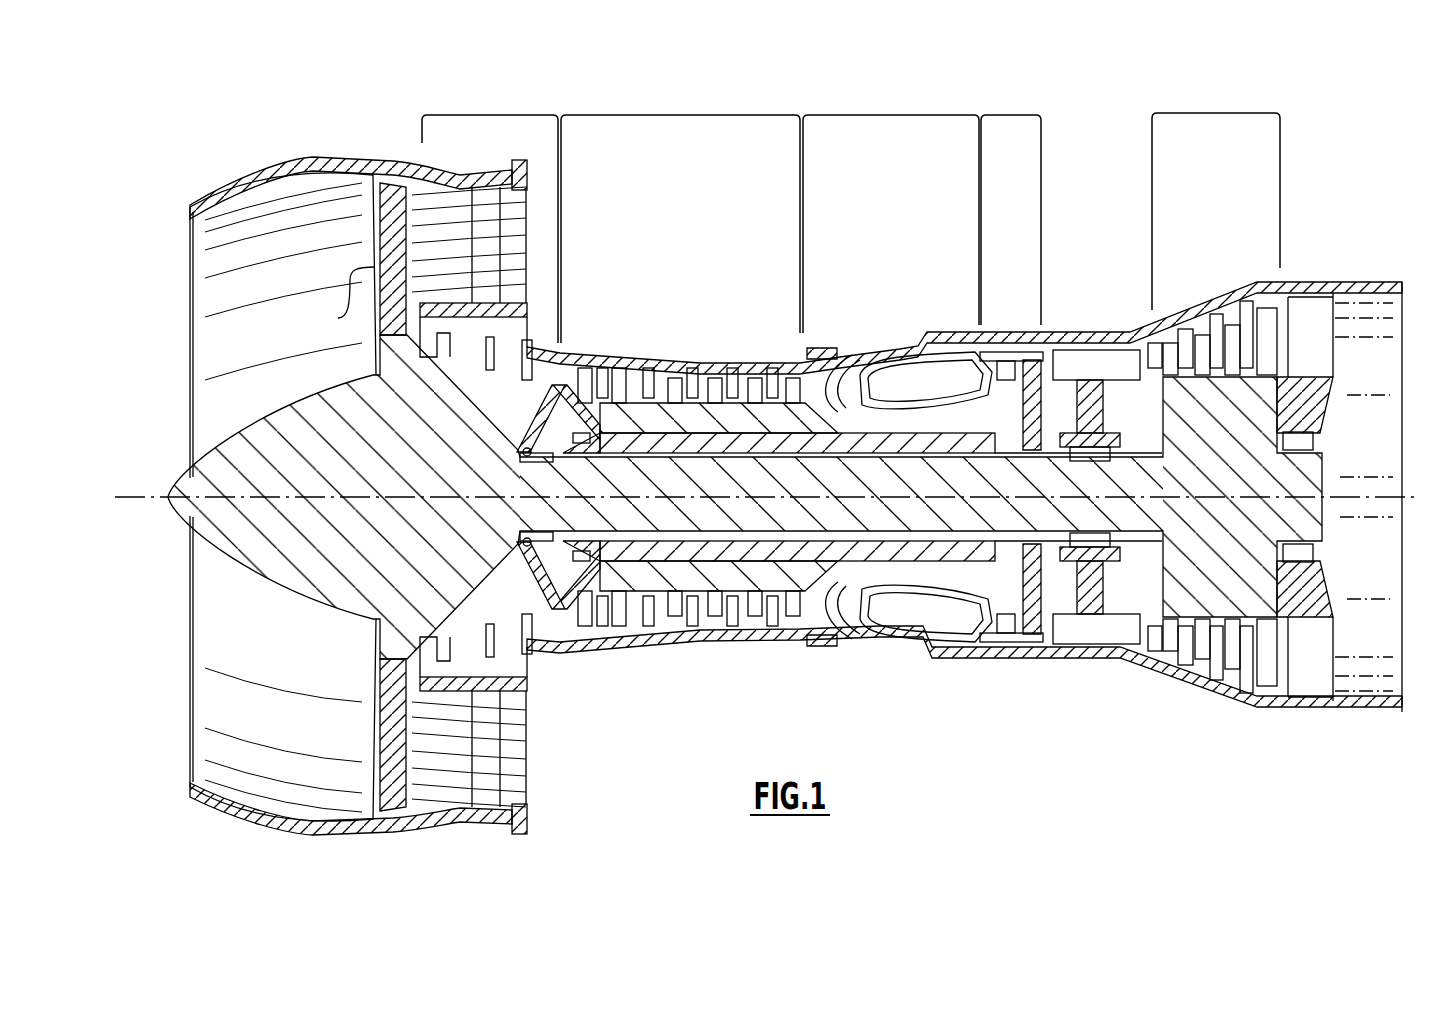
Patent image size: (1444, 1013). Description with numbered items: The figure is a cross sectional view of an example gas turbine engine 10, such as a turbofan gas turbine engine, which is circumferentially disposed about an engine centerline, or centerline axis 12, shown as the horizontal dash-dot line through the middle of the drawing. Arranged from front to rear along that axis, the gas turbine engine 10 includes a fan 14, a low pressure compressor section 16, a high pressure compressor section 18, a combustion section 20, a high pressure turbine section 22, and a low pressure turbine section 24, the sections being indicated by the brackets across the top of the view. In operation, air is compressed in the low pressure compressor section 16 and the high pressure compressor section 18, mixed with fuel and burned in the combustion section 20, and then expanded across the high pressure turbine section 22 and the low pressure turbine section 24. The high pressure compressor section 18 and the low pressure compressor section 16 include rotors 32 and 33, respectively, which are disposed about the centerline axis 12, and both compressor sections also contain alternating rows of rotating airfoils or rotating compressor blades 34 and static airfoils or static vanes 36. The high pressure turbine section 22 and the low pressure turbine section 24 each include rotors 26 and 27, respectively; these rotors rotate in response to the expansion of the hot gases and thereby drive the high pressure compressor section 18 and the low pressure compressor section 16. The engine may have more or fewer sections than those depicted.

The gas turbine engine 10 is at (1070, 208).
The centerline axis 12 is at (130, 497).
The fan 14 is at (338, 318).
The low pressure compressor section 16 is at (488, 115).
The high pressure compressor section 18 is at (667, 115).
The combustion section 20 is at (887, 115).
The high pressure turbine section 22 is at (1010, 115).
The low pressure turbine section 24 is at (1220, 113).
The rotor 26 is at (1030, 408).
The rotor 27 is at (1250, 417).
The rotor 32 is at (670, 418).
The rotor 33 is at (507, 400).
The rotating compressor blades 34 is at (767, 393).
The static vanes 36 is at (790, 396).